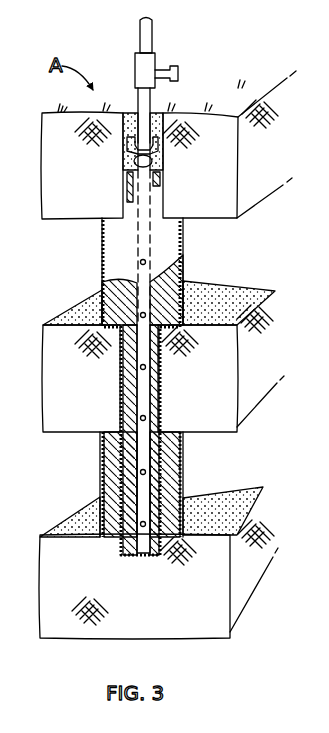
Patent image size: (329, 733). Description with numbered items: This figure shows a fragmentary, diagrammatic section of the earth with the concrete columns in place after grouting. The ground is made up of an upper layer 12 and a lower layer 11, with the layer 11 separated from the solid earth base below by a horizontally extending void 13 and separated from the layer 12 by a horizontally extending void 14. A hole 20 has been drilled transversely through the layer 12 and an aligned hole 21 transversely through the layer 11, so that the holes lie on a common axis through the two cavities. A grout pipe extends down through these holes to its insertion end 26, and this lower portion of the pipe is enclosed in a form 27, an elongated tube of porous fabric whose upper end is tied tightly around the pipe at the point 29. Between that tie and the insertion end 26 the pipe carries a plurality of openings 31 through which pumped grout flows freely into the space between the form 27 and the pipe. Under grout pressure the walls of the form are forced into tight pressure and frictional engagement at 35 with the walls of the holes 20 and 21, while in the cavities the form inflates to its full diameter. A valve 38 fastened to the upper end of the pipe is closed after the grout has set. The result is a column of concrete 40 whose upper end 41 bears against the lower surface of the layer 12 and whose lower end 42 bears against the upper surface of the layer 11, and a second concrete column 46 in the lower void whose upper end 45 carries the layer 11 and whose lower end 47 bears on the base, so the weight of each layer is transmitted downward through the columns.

The layer 11 is at (57, 385).
The layer 12 is at (55, 203).
The horizontally extending void 13 is at (62, 488).
The horizontally extending void 14 is at (70, 257).
The hole 20 is at (165, 136).
The hole 21 is at (120, 388).
The insertion end 26 is at (137, 555).
The form 27 is at (185, 247).
The tie point 29 is at (125, 180).
The openings 31 is at (128, 474).
The pressure and frictional engagement 35 is at (160, 190).
The valve 38 is at (148, 62).
The column of concrete 40 is at (110, 301).
The upper end 41 is at (173, 216).
The lower end 42 is at (178, 348).
The upper end 45 is at (163, 428).
The concrete column 46 is at (165, 474).
The lower end 47 is at (163, 563).